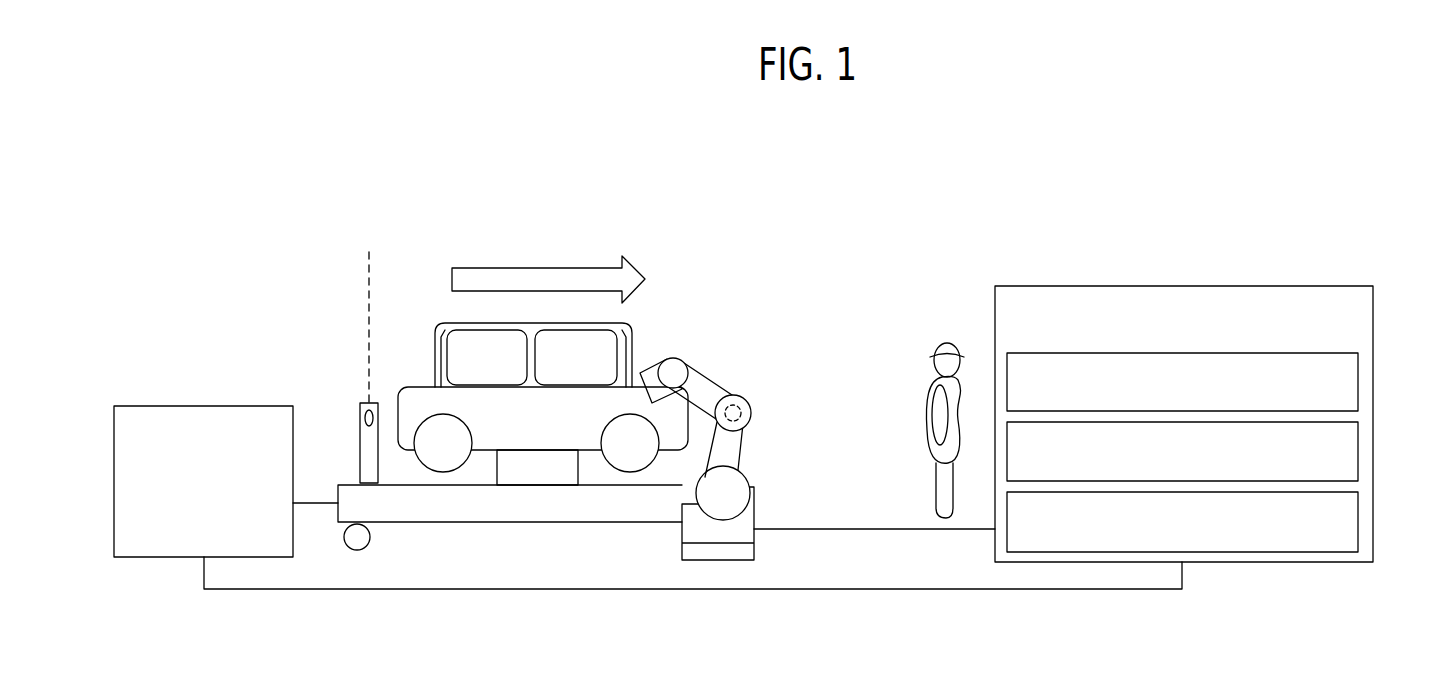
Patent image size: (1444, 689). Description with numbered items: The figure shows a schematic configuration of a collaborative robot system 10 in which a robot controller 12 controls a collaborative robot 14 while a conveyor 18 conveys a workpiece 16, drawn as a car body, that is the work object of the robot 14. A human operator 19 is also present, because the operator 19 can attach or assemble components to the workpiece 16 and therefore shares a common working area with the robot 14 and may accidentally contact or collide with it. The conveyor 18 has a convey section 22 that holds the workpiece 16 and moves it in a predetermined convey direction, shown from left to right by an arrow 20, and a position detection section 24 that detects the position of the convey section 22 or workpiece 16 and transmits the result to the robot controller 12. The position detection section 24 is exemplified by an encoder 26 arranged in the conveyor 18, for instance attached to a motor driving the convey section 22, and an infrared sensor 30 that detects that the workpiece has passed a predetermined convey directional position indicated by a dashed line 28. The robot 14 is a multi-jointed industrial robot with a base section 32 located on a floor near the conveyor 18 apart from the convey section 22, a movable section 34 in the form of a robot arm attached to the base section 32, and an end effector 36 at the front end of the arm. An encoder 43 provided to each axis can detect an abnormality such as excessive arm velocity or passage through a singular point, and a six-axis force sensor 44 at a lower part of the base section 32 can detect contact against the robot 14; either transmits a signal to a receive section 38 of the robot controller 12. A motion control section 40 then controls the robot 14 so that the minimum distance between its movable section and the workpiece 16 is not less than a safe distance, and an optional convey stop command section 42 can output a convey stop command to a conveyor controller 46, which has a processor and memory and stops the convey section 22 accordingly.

The collaborative robot system 10 is at (951, 250).
The robot controller 12 is at (1320, 286).
The collaborative robot 14 is at (711, 356).
The workpiece 16 is at (405, 378).
The conveyor 18 is at (490, 550).
The operator 19 is at (947, 342).
The arrow 20 is at (490, 267).
The convey section 22 is at (494, 467).
The position detection section 24 is at (341, 350).
The encoder 26 is at (344, 536).
The dashed line 28 is at (369, 289).
The infrared sensor 30 is at (360, 433).
The base section 32 is at (757, 537).
The movable section 34 is at (735, 395).
The end effector 36 is at (648, 370).
The receive section 38 is at (1358, 390).
The motion control section 40 is at (1358, 443).
The convey stop command section 42 is at (1330, 553).
The encoder 43 is at (741, 413).
The six-axis force sensor 44 is at (735, 560).
The conveyor controller 46 is at (230, 406).